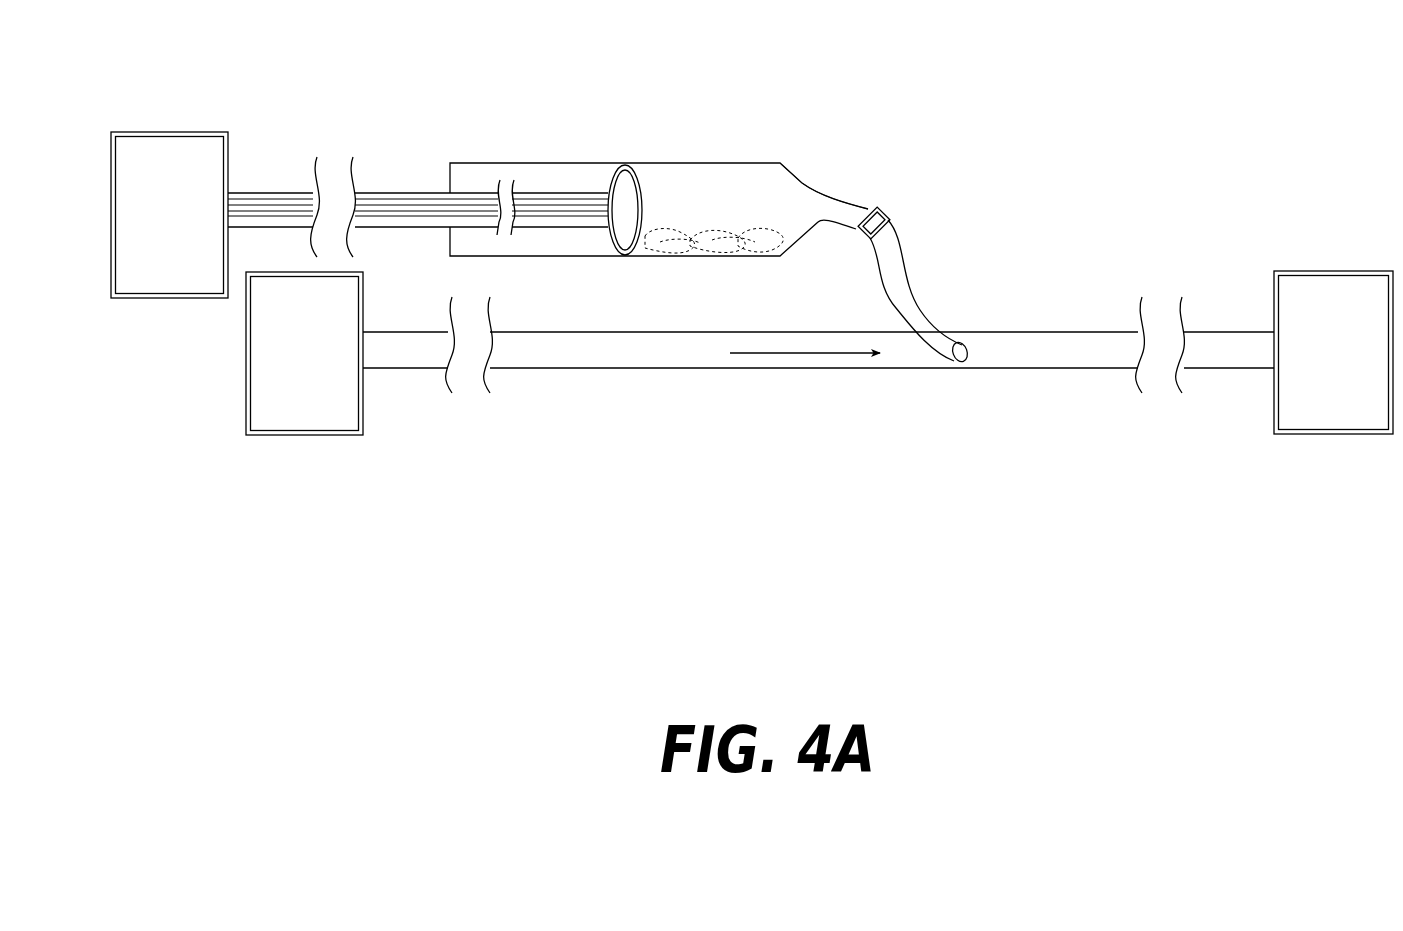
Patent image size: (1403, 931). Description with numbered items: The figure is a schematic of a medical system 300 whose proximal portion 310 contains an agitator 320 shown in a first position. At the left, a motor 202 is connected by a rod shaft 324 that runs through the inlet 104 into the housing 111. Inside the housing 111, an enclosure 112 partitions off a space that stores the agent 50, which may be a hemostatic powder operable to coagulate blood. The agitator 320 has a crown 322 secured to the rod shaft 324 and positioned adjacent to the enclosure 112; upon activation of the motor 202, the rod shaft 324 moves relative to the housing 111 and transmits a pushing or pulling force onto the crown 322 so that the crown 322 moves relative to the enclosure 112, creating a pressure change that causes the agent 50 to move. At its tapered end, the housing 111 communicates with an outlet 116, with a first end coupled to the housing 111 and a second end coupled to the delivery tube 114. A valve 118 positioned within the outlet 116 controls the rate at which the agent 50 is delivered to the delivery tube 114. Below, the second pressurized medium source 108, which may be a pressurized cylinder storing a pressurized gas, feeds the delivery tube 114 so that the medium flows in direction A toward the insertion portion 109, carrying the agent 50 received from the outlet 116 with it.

The medical system 300 is at (1043, 76).
The motor 202 is at (167, 310).
The inlet 104 is at (262, 192).
The rod shaft 324 is at (411, 205).
The proximal portion 310 is at (662, 151).
The crown 322 is at (612, 190).
The agitator 320 is at (655, 208).
The agent 50 is at (746, 252).
The enclosure 112 is at (660, 262).
The housing 111 is at (800, 175).
The valve 118 is at (860, 240).
The outlet 116 is at (898, 275).
The second pressurized medium source 108 is at (307, 445).
The insertion portion 109 is at (1316, 445).
The delivery tube 114 is at (658, 355).
The flow direction A is at (830, 354).